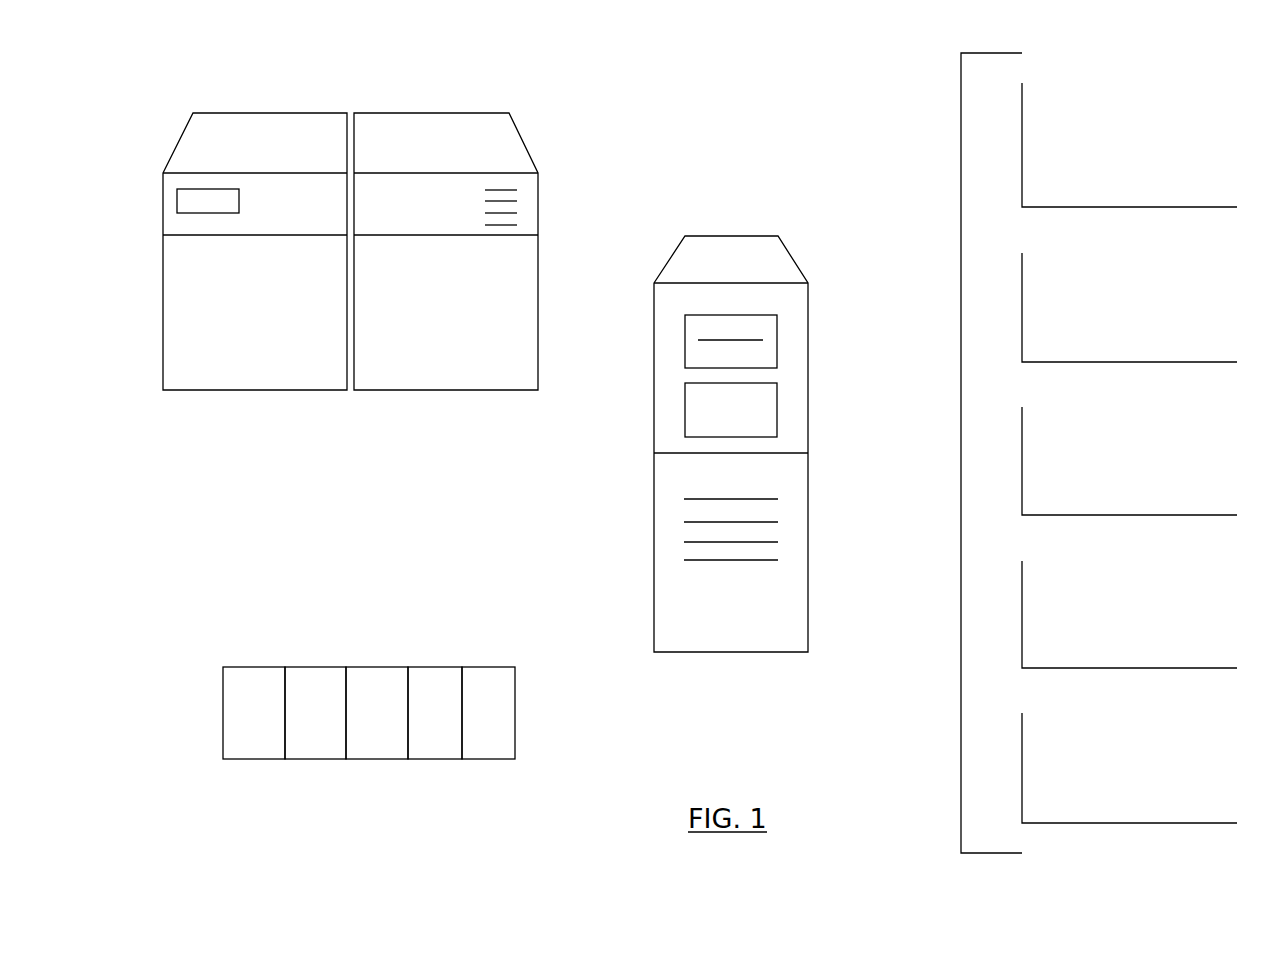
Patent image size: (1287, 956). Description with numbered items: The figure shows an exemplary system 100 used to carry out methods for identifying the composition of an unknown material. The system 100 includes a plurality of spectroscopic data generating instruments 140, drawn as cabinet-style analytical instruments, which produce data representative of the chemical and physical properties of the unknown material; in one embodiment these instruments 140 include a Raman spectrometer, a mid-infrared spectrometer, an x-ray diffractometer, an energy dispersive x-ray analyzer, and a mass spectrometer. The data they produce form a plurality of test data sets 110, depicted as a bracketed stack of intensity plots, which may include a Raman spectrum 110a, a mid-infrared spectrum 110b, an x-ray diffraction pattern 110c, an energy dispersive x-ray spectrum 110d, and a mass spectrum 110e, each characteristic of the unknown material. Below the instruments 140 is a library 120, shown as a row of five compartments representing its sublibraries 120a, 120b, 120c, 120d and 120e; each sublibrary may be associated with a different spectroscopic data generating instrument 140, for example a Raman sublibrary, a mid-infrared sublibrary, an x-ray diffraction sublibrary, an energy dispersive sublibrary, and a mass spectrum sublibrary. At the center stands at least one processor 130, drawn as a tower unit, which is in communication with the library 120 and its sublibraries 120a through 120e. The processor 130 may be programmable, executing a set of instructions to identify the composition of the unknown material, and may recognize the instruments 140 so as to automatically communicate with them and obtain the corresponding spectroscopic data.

The system 100 is at (730, 85).
The plurality of test data sets 110 is at (961, 193).
The Raman spectrum 110a is at (1167, 161).
The mid-infrared spectrum 110b is at (1169, 330).
The x-ray diffraction pattern 110c is at (1176, 494).
The energy dispersive x-ray spectrum 110d is at (1169, 641).
The mass spectrum 110e is at (1172, 792).
The library 120 is at (369, 735).
The sublibrary 120a is at (234, 723).
The sublibrary 120b is at (295, 723).
The sublibrary 120c is at (357, 723).
The sublibrary 120d is at (415, 723).
The sublibrary 120e is at (468, 723).
The processor 130 is at (700, 652).
The spectroscopic data generating instruments 140 is at (253, 390).